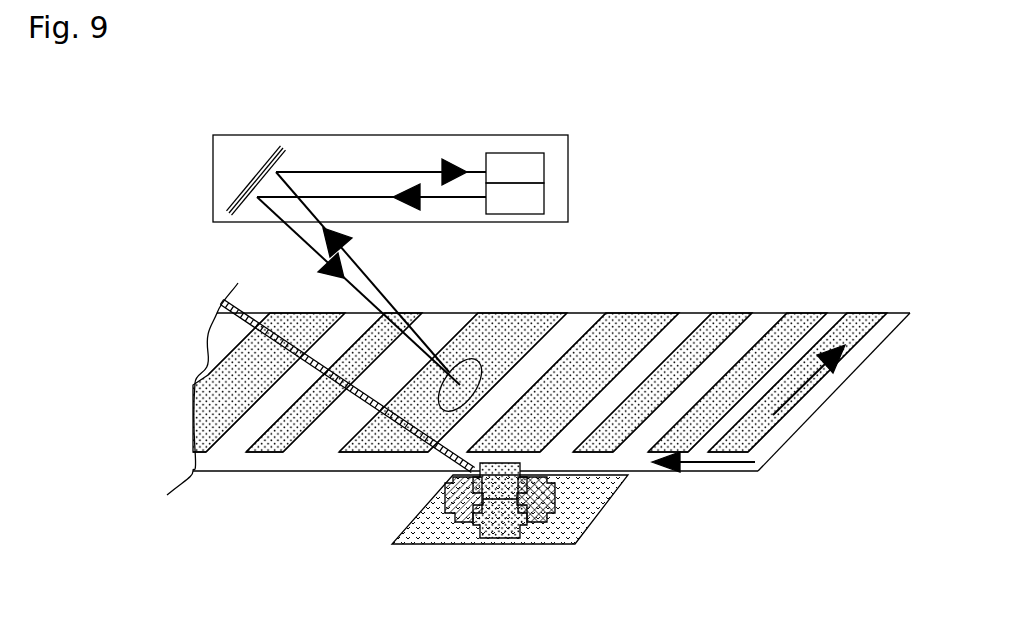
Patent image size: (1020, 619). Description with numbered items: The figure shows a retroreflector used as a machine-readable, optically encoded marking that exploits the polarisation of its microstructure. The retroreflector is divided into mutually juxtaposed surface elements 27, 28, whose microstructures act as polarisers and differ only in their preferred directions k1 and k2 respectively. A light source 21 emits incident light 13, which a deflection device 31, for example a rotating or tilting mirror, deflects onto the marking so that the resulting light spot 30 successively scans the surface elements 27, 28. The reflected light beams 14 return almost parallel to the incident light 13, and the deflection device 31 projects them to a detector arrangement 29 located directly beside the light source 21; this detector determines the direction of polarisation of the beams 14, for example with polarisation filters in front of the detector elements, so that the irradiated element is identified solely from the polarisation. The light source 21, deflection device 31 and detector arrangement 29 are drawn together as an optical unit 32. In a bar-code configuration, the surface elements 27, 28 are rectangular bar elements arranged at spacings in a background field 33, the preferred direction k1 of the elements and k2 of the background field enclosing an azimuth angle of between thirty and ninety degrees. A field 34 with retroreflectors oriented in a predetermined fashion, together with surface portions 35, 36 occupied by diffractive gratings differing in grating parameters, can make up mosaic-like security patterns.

The incident light 13 is at (422, 337).
The reflected light beams 14 is at (462, 174).
The light source 21 is at (532, 205).
The surface element 27 is at (723, 325).
The surface element 28 is at (633, 318).
The detector arrangement 29 is at (532, 168).
The light spot 30 is at (493, 350).
The deflection device 31 is at (262, 163).
The optical measuring unit 32 is at (346, 165).
The background field 33 is at (220, 460).
The field 34 is at (410, 535).
The surface portion 35 is at (353, 398).
The surface portion 36 is at (548, 505).
The preferred direction k1 is at (805, 372).
The preferred direction k2 is at (725, 458).